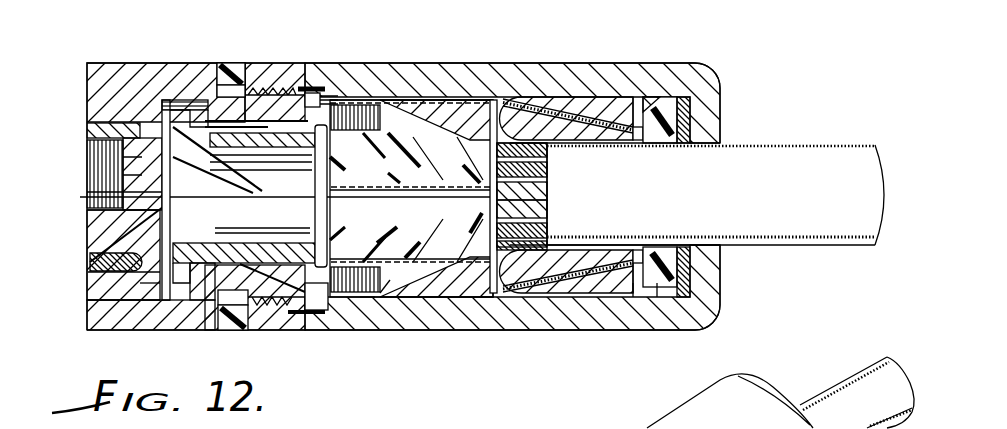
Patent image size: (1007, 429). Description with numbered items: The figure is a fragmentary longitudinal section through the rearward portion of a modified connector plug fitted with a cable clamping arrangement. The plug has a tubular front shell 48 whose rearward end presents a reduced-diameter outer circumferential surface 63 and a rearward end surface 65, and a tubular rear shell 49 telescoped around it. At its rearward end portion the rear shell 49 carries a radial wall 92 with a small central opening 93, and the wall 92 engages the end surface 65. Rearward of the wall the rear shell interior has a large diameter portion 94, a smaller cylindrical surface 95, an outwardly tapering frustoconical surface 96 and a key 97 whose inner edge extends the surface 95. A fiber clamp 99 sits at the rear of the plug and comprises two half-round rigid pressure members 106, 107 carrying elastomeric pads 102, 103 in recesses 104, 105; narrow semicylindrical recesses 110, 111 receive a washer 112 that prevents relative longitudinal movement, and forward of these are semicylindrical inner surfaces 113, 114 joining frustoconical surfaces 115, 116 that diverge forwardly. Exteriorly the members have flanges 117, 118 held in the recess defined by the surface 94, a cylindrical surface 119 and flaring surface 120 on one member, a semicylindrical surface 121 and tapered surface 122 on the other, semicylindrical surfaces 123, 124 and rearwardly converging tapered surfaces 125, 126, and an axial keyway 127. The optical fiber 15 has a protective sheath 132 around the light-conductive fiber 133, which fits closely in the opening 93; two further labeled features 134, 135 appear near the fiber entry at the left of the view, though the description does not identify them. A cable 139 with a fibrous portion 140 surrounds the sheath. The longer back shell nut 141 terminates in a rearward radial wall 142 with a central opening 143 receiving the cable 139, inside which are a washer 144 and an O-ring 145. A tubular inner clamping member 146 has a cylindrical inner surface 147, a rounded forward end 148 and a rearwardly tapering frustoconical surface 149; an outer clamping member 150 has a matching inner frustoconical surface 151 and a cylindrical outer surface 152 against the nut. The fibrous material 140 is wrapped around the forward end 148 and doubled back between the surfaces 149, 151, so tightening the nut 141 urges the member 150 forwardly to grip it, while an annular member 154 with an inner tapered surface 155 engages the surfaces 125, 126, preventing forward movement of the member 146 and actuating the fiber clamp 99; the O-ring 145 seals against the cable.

The optical fiber 15 is at (839, 138).
The front shell 48 is at (90, 270).
The rear shell 49 is at (108, 333).
The outer circumferential surface 63 is at (90, 298).
The rearward end surface 65 is at (140, 283).
The radial wall 92 is at (92, 260).
The central opening 93 is at (80, 197).
The large diameter portion 94 is at (173, 302).
The cylindrical surface 95 is at (258, 272).
The frustoconical surface 96 is at (306, 312).
The key 97 is at (322, 93).
The fiber clamp 99 is at (368, 92).
The pad 102 is at (400, 181).
The pad 103 is at (393, 229).
The recess 104 is at (430, 182).
The recess 105 is at (452, 218).
The pressure member 106 is at (412, 110).
The pressure member 107 is at (383, 293).
The semicylindrical recess 110 is at (340, 140).
The semicylindrical recess 111 is at (346, 248).
The washer 112 is at (335, 229).
The semicylindrical inner surface 113 is at (265, 163).
The semicylindrical inner surface 114 is at (260, 243).
The frustoconical surface 115 is at (110, 152).
The frustoconical surface 116 is at (200, 240).
The flange 117 is at (155, 108).
The flange 118 is at (170, 300).
The exterior cylindrical surface 119 is at (233, 115).
The rearwardly flaring surface 120 is at (262, 85).
The semicylindrical surface 121 is at (215, 300).
The tapered surface 122 is at (268, 272).
The semicylindrical surface 123 is at (350, 97).
The semicylindrical surface 124 is at (368, 297).
The tapered surface 125 is at (470, 128).
The tapered surface 126 is at (447, 268).
The keyway 127 is at (387, 100).
The protective sheath 132 is at (548, 200).
The light-conductive fiber 133 is at (82, 211).
The taper line 134 is at (170, 185).
The diagonal member 135 is at (125, 238).
The cable 139 is at (747, 145).
The fibrous portion 140 is at (550, 97).
The back shell nut 141 is at (503, 63).
The rearward radial wall 142 is at (720, 282).
The central opening 143 is at (722, 248).
The washer 144 is at (690, 112).
The O-ring 145 is at (665, 145).
The inner clamping member 146 is at (563, 250).
The cylindrical inner surface 147 is at (632, 247).
The rounded forward end 148 is at (501, 256).
The frustoconical surface 149 is at (582, 293).
The outer clamping member 150 is at (657, 293).
The inner frustoconical surface 151 is at (562, 140).
The outer surface 152 is at (633, 293).
The annular member 154 is at (433, 302).
The inner tapered surface 155 is at (438, 262).